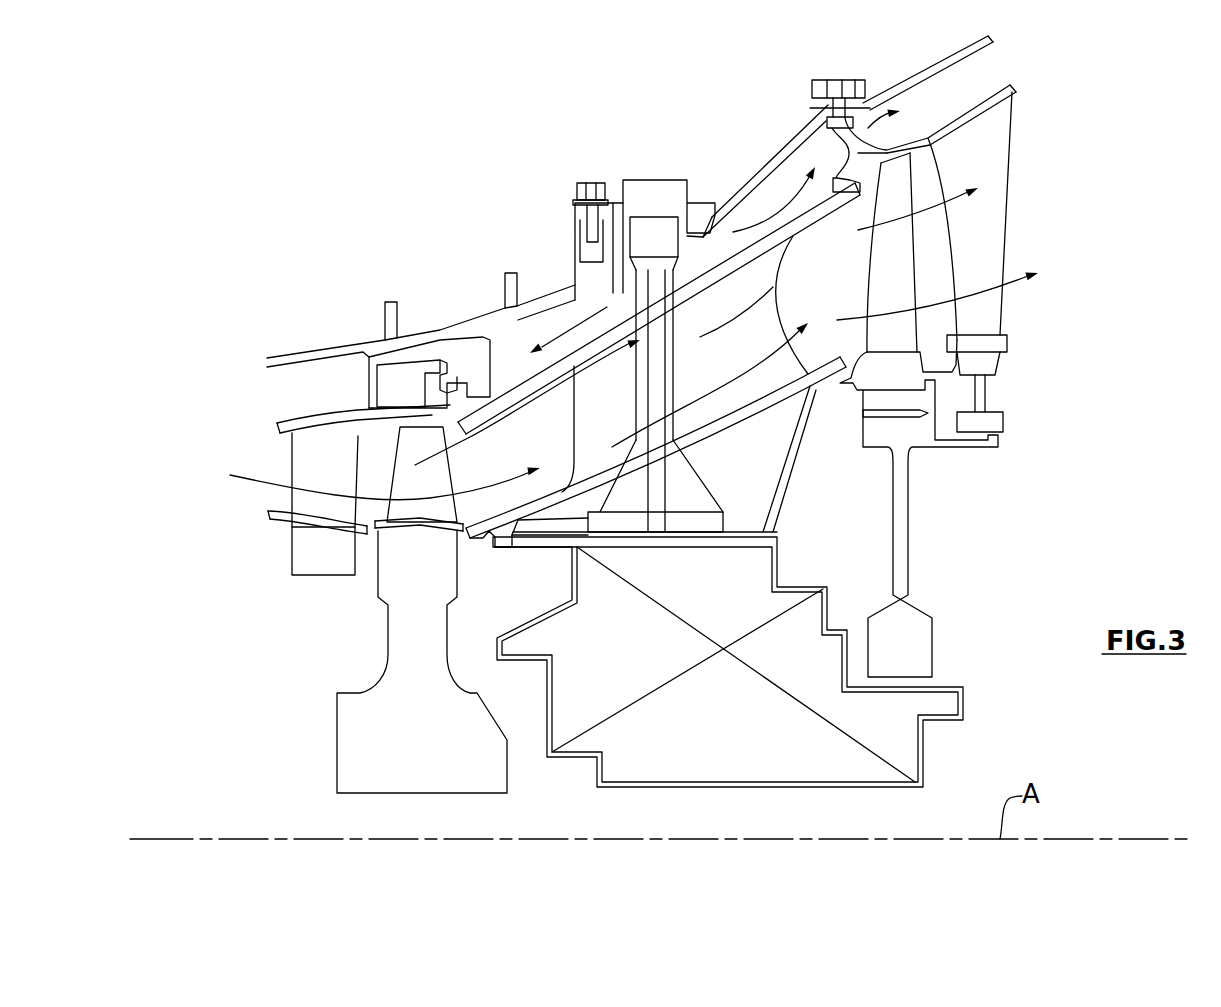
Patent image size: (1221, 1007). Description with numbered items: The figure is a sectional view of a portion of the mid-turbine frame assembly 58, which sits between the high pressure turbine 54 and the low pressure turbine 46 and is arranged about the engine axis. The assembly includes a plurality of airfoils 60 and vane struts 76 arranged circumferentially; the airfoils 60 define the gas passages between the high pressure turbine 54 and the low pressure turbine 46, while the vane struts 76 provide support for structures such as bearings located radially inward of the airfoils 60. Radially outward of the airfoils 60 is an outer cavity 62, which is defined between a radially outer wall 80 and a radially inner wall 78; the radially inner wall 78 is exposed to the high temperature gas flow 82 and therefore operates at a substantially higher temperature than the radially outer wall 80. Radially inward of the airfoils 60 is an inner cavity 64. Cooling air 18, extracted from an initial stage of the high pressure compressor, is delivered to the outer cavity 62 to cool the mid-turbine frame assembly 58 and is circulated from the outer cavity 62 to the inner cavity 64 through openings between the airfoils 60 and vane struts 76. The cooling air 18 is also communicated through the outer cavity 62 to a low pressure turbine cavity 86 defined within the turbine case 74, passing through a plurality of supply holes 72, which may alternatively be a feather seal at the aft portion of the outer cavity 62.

The mid-turbine frame assembly 58 is at (440, 163).
The radially outer wall 80 is at (553, 295).
The high temperature gas flow 82 is at (460, 428).
The high pressure turbine 54 is at (420, 488).
The airfoils 60 is at (598, 436).
The vane struts 76 is at (655, 431).
The inner cavity 64 is at (755, 454).
The radially inner wall 78 is at (778, 264).
The low pressure turbine 46 is at (893, 293).
The low pressure turbine cavity 86 is at (956, 94).
The turbine case 74 is at (936, 65).
The supply holes 72 is at (846, 78).
The outer cavity 62 is at (763, 205).
The cooling air 18 is at (797, 190).